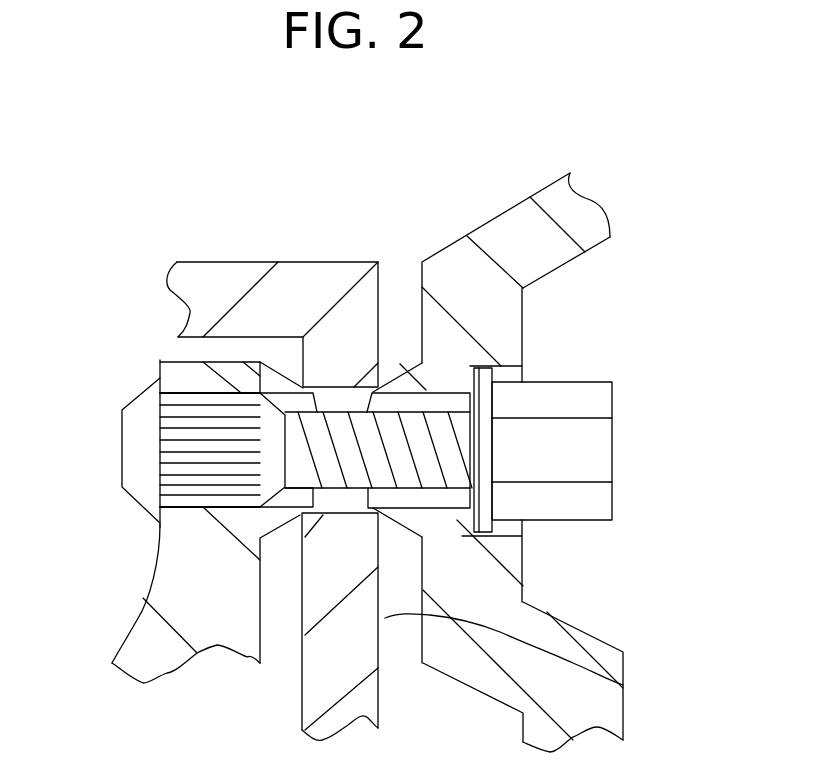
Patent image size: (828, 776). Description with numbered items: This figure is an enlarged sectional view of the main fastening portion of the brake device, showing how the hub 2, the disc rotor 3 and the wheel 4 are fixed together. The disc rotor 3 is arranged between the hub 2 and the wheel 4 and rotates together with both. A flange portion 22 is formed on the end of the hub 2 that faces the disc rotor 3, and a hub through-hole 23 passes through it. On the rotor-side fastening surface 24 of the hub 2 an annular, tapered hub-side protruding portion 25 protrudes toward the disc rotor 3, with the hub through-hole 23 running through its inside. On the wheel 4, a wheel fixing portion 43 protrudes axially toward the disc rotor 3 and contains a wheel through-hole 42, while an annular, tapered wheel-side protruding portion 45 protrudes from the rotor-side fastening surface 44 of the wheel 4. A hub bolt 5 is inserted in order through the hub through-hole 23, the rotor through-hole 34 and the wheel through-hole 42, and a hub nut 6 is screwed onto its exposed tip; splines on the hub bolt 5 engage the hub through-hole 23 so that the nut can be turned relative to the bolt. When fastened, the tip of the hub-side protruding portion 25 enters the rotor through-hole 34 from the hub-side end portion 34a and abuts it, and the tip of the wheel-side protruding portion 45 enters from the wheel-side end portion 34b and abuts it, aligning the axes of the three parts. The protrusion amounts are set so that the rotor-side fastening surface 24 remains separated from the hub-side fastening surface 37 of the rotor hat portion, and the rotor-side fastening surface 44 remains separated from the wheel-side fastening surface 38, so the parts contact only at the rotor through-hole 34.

The hub 2 is at (108, 637).
The disc rotor 3 is at (275, 248).
The wheel 4 is at (512, 190).
The hub bolt 5 is at (108, 448).
The hub nut 6 is at (628, 448).
The flange portion 22 is at (177, 566).
The hub through-hole 23 is at (297, 500).
The rotor-side fastening surface 24 is at (260, 600).
The hub-side protruding portion 25 is at (282, 387).
The rotor through-hole 34 is at (340, 400).
The hub-side end portion 34a is at (207, 392).
The wheel-side end portion 34b is at (398, 440).
The hub-side fastening surface 37 is at (302, 710).
The wheel-side fastening surface 38 is at (623, 685).
The wheel through-hole 42 is at (418, 497).
The wheel fixing portion 43 is at (492, 570).
The rotor-side fastening surface 44 is at (415, 637).
The wheel-side protruding portion 45 is at (400, 383).